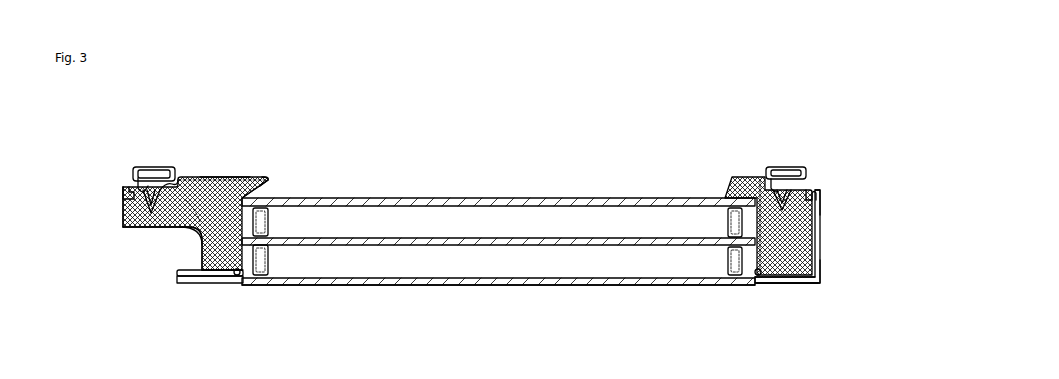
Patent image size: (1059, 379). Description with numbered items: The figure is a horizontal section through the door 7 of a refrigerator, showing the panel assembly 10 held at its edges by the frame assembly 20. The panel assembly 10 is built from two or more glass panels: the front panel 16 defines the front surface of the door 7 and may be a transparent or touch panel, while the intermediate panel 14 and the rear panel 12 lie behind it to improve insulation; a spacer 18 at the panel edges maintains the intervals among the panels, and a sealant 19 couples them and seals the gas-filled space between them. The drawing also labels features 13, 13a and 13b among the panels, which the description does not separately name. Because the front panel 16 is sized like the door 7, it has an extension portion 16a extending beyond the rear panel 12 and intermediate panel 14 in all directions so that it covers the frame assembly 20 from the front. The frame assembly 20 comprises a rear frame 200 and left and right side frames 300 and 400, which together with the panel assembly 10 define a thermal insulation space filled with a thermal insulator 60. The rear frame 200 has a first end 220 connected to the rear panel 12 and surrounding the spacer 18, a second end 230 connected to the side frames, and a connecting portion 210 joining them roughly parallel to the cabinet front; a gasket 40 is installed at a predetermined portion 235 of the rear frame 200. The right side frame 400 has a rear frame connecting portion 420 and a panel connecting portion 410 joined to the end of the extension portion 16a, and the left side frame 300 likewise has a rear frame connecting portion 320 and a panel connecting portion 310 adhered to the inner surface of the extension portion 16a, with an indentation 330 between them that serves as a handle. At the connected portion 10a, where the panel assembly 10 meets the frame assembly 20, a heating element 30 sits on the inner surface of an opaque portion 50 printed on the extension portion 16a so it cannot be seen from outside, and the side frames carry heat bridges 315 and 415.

The door 7 is at (655, 104).
The panel assembly 10 is at (498, 198).
The connected portion 10a is at (233, 208).
The rear panel 12 is at (387, 203).
The gap layers 13 is at (620, 198).
The first gap 13a is at (587, 223).
The second gap 13b is at (633, 258).
The intermediate panel 14 is at (442, 245).
The front panel 16 is at (488, 282).
The extension portion 16a is at (207, 286).
The spacer 18 is at (265, 258).
The sealant 19 is at (252, 260).
The frame assembly 20 is at (208, 148).
The heating element 30 is at (237, 280).
The gasket 40 is at (145, 160).
The opaque portion 50 is at (193, 285).
The thermal insulator 60 is at (197, 217).
The rear frame 200 is at (240, 163).
The connecting portion 210 is at (220, 175).
The first end 220 is at (275, 191).
The second end 230 is at (128, 197).
The predetermined portion 235 is at (190, 198).
The side frame 300 is at (165, 290).
The panel connecting portion 310 is at (182, 285).
The heat bridge 315 is at (217, 285).
The rear frame connecting portion 320 is at (125, 215).
The indentation 330 is at (193, 242).
The side frame 400 is at (823, 253).
The panel connecting portion 410 is at (821, 262).
The heat bridge 415 is at (783, 284).
The rear frame connecting portion 420 is at (822, 203).